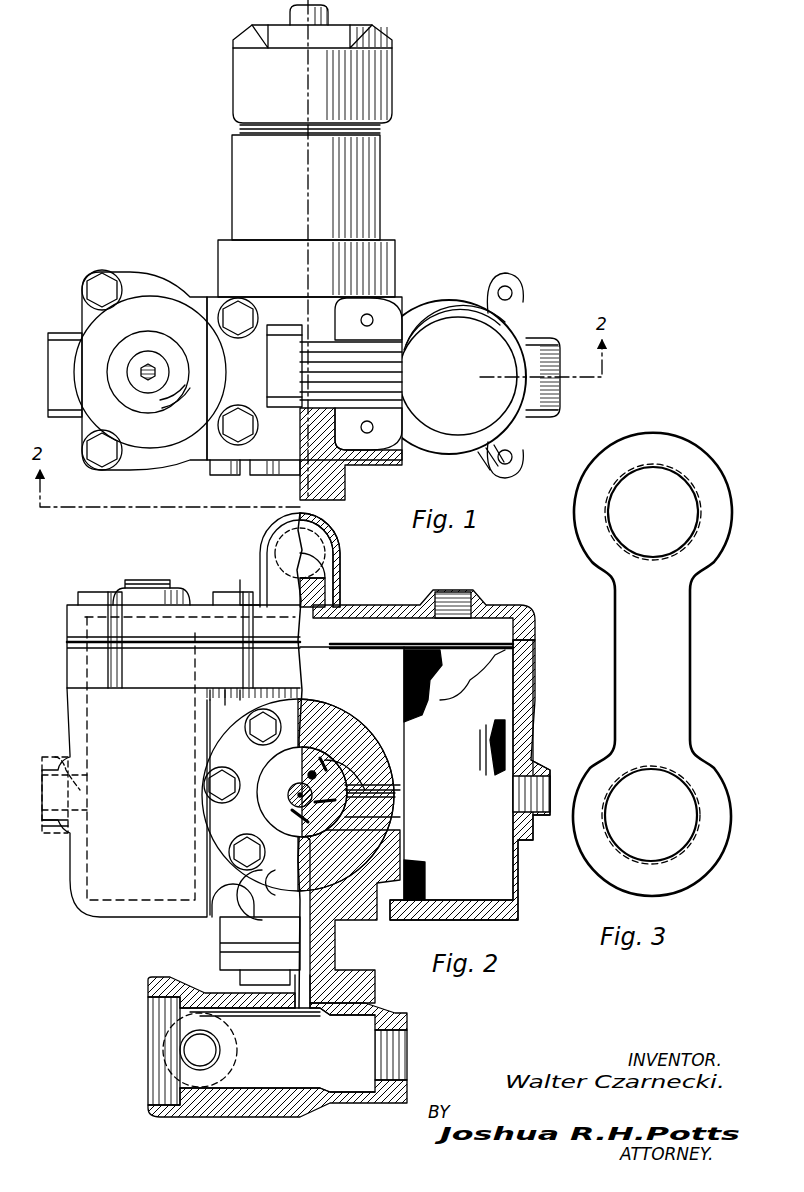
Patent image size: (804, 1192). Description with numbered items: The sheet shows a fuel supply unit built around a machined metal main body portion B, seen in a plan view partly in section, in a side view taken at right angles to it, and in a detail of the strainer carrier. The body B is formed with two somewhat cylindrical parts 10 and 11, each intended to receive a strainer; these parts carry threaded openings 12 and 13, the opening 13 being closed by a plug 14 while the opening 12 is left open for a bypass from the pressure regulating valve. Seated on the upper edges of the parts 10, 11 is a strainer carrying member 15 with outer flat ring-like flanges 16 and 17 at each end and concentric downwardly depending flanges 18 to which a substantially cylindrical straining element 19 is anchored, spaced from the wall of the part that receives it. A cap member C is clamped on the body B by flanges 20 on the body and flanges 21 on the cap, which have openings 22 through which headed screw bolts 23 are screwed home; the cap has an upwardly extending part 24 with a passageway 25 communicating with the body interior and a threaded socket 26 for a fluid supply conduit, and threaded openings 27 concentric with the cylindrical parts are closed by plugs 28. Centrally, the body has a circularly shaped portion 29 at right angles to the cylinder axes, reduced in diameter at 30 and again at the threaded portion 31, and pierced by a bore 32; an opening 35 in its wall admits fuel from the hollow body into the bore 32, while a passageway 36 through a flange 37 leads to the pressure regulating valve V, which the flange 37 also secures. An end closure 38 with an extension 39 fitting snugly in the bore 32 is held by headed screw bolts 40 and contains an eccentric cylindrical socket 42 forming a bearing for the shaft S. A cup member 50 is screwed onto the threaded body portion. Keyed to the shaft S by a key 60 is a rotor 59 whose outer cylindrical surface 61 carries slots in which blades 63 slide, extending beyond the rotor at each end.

In FIG. 1, the shaft S is at (294, 16).
In FIG. 2, the shaft S is at (290, 792).
In FIG. 1, the cup member 50 is at (233, 88).
In FIG. 1, the reduced threaded portion 31 is at (240, 128).
In FIG. 1, the reduced portion 30 is at (232, 195).
In FIG. 1, the circularly shaped portion 29 is at (218, 258).
In FIG. 2, the circularly shaped portion 29 is at (320, 708).
In FIG. 1, the headed screw bolts 23 is at (108, 283).
In FIG. 1, the flanges 21 is at (84, 291).
In FIG. 1, the upwardly extending part 24 is at (281, 325).
In FIG. 2, the upwardly extending part 24 is at (340, 572).
In FIG. 1, the main body portion B is at (409, 294).
In FIG. 2, the main body portion B is at (84, 922).
In FIG. 1, the openings 22 is at (503, 280).
In FIG. 1, the flanges 20 is at (520, 298).
In FIG. 1, the plugs 28 is at (140, 375).
In FIG. 2, the plugs 28 is at (150, 580).
In FIG. 1, the extension 39 is at (345, 398).
In FIG. 1, the headed screw bolts 40 is at (216, 474).
In FIG. 2, the headed screw bolts 40 is at (205, 785).
In FIG. 1, the cylindrical socket 42 is at (350, 470).
In FIG. 1, the end closure 38 is at (378, 462).
In FIG. 2, the end closure 38 is at (210, 748).
In FIG. 2, the threaded socket 26 is at (340, 532).
In FIG. 2, the passageway 25 is at (262, 600).
In FIG. 2, the cap member C is at (247, 583).
In FIG. 2, the threaded openings 27 is at (470, 592).
In FIG. 2, the strainer carrying member 15 is at (350, 646).
In FIG. 3, the strainer carrying member 15 is at (626, 640).
In FIG. 2, the downwardly depending flanges 18 is at (432, 646).
In FIG. 3, the downwardly depending flanges 18 is at (612, 497).
In FIG. 2, the cylindrically shaped part 10 is at (533, 716).
In FIG. 2, the threaded opening 12 is at (552, 772).
In FIG. 2, the straining element 19 is at (404, 690).
In FIG. 2, the cylindrically shaped part 11 is at (70, 704).
In FIG. 2, the plug 14 is at (40, 800).
In FIG. 2, the threaded opening 13 is at (56, 773).
In FIG. 2, the opening 35 is at (368, 780).
In FIG. 2, the key 60 is at (312, 772).
In FIG. 2, the rotor 59 is at (322, 790).
In FIG. 2, the outer cylindrical surface 61 is at (398, 794).
In FIG. 2, the bore 32 is at (402, 818).
In FIG. 2, the blades 63 is at (280, 826).
In FIG. 2, the passageway 36 is at (265, 905).
In FIG. 2, the flange 37 is at (220, 935).
In FIG. 2, the pressure regulating valve V is at (146, 1066).
In FIG. 3, the flat ring-like flange 16 is at (689, 452).
In FIG. 3, the flat ring-like flange 17 is at (604, 868).